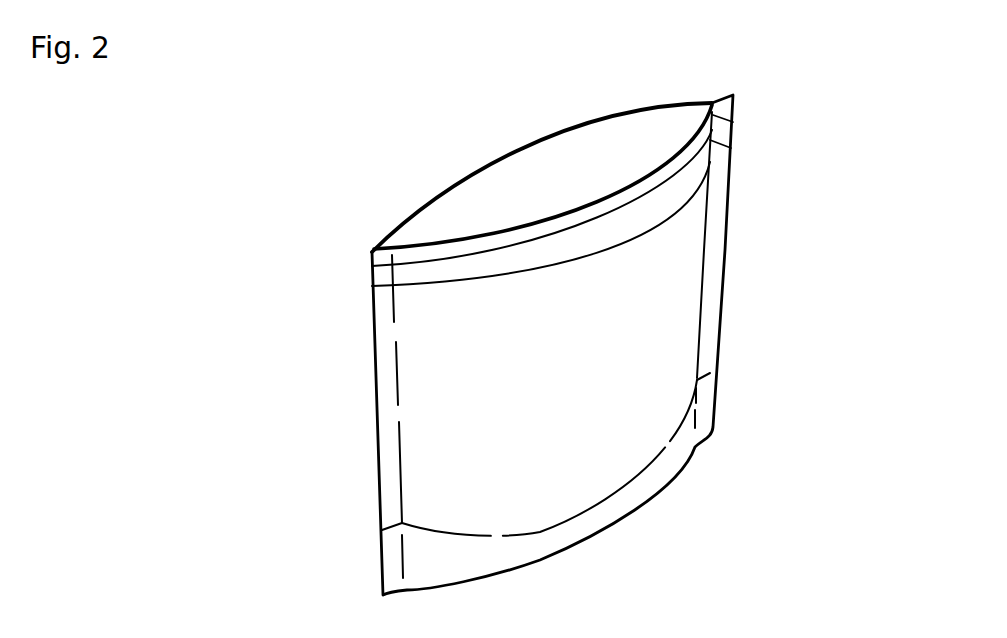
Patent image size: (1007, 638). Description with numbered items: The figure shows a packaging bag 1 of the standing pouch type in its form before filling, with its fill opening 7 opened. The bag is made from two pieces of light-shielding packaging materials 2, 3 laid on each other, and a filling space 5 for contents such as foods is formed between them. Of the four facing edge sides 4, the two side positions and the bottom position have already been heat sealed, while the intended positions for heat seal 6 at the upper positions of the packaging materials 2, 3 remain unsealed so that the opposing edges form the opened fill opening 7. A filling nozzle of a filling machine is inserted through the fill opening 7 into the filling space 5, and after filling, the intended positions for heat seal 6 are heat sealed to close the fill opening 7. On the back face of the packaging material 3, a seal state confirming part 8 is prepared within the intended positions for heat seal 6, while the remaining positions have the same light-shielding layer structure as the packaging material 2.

The packaging bag 1 is at (745, 303).
The packaging material 2 is at (428, 223).
The packaging material 3 is at (438, 347).
The edge sides 4 is at (377, 447).
The filling space 5 is at (538, 178).
The intended positions for heat seal 6 is at (572, 130).
The fill opening 7 is at (497, 188).
The seal state confirming part 8 is at (642, 207).